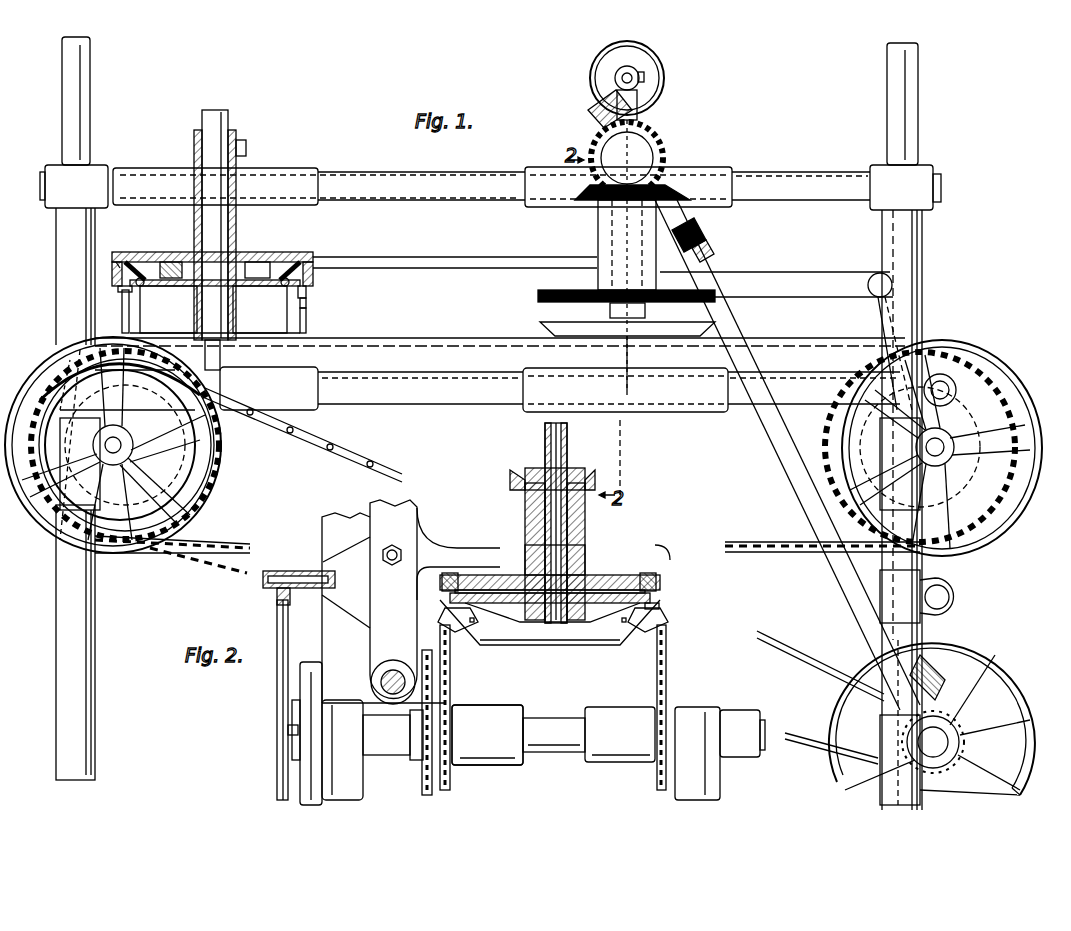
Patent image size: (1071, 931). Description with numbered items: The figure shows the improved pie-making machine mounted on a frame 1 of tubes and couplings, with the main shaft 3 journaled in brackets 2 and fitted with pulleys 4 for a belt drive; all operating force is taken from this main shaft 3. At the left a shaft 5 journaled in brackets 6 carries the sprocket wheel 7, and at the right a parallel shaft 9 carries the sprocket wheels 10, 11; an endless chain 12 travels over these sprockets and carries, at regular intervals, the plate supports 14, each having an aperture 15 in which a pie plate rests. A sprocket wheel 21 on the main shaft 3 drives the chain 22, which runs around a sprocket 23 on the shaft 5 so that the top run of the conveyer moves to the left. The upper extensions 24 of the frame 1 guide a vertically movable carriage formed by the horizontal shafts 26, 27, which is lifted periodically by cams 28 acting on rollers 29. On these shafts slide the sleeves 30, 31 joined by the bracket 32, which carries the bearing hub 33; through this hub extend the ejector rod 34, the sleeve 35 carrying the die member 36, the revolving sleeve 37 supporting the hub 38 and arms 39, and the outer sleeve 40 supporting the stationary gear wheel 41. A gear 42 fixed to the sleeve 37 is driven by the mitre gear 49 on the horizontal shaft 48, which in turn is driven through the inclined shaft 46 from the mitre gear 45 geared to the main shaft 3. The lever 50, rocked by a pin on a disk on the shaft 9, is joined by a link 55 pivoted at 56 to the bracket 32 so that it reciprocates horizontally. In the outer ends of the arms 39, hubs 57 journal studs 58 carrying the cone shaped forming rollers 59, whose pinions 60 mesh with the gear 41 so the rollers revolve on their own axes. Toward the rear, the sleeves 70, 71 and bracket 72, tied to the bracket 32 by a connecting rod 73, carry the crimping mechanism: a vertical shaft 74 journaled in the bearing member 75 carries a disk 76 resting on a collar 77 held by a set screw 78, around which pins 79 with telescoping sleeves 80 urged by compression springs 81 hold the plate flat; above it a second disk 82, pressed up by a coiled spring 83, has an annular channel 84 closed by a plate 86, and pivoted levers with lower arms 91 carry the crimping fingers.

In FIG. 1, the frame 1 is at (96, 610).
In FIG. 1, the brackets 2 is at (900, 722).
In FIG. 1, the main shaft 3 is at (935, 738).
In FIG. 1, the pulleys 4 is at (100, 395).
In FIG. 1, the shaft 5 is at (125, 445).
In FIG. 1, the brackets 6 is at (75, 495).
In FIG. 1, the sprocket wheel 7 is at (200, 498).
In FIG. 1, the shaft 9 is at (960, 448).
In FIG. 2, the shaft 9 is at (551, 718).
In FIG. 1, the sprocket wheel 10 is at (830, 432).
In FIG. 2, the sprocket wheel 10 is at (667, 670).
In FIG. 2, the sprocket wheel 11 is at (452, 702).
In FIG. 1, the endless chain 12 is at (125, 556).
In FIG. 1, the plate support 14 is at (440, 338).
In FIG. 2, the plate support 14 is at (634, 640).
In FIG. 2, the aperture 15 is at (480, 640).
In FIG. 1, the sprocket wheel 21 is at (963, 745).
In FIG. 1, the chain 22 is at (370, 462).
In FIG. 1, the sprocket 23 is at (195, 452).
In FIG. 2, the sprocket 23 is at (420, 773).
In FIG. 1, the upper extensions 24 is at (92, 125).
In FIG. 1, the upper horizontal shaft 26 is at (792, 172).
In FIG. 1, the lower horizontal shaft 27 is at (792, 372).
In FIG. 1, the cam 28 is at (145, 500).
In FIG. 2, the cam 28 is at (300, 720).
In FIG. 1, the roller 29 is at (90, 375).
In FIG. 2, the roller 29 is at (308, 662).
In FIG. 1, the sliding sleeve 30 is at (732, 172).
In FIG. 1, the sliding sleeve 31 is at (625, 390).
In FIG. 1, the bracket 32 is at (622, 355).
In FIG. 2, the bearing hub 33 is at (586, 515).
In FIG. 2, the rod 34 is at (560, 426).
In FIG. 2, the sleeve 35 is at (568, 450).
In FIG. 2, the die member 36 is at (580, 640).
In FIG. 2, the sleeve 37 is at (586, 556).
In FIG. 2, the hub 38 is at (552, 620).
In FIG. 2, the arms 39 is at (485, 588).
In FIG. 2, the sleeve 40 is at (580, 565).
In FIG. 2, the stationary gear wheel 41 is at (640, 578).
In FIG. 1, the gear 42 is at (590, 205).
In FIG. 2, the gear 42 is at (518, 478).
In FIG. 1, the mitre gear 45 is at (940, 690).
In FIG. 1, the inclined shaft 46 is at (780, 478).
In FIG. 1, the horizontal shaft 48 is at (648, 103).
In FIG. 1, the mitre gear 49 is at (665, 150).
In FIG. 1, the lever 50 is at (870, 320).
In FIG. 1, the link 55 is at (792, 274).
In FIG. 2, the link 55 is at (283, 688).
In FIG. 1, the pivot 56 is at (560, 285).
In FIG. 2, the pivot 56 is at (270, 575).
In FIG. 2, the hubs 57 is at (662, 603).
In FIG. 2, the stud 58 is at (658, 578).
In FIG. 2, the cone shaped forming roller 59 is at (440, 612).
In FIG. 1, the pinion 60 is at (822, 485).
In FIG. 2, the pinion 60 is at (662, 583).
In FIG. 1, the upper sleeve 70 is at (312, 172).
In FIG. 1, the lower sleeve 71 is at (320, 372).
In FIG. 1, the bracket 72 is at (222, 355).
In FIG. 1, the connecting rod 73 is at (455, 255).
In FIG. 1, the vertical shaft 74 is at (230, 118).
In FIG. 1, the bearing member 75 is at (194, 145).
In FIG. 1, the disk 76 is at (252, 286).
In FIG. 1, the collar 77 is at (194, 320).
In FIG. 1, the set screw 78 is at (240, 322).
In FIG. 1, the pins 79 is at (308, 304).
In FIG. 1, the telescoping sleeves 80 is at (122, 322).
In FIG. 1, the compression springs 81 is at (308, 290).
In FIG. 1, the second disk 82 is at (258, 252).
In FIG. 1, the coiled spring 83 is at (180, 262).
In FIG. 1, the annular channel 84 is at (300, 268).
In FIG. 1, the plate 86 is at (345, 255).
In FIG. 1, the lower arms 91 is at (135, 298).